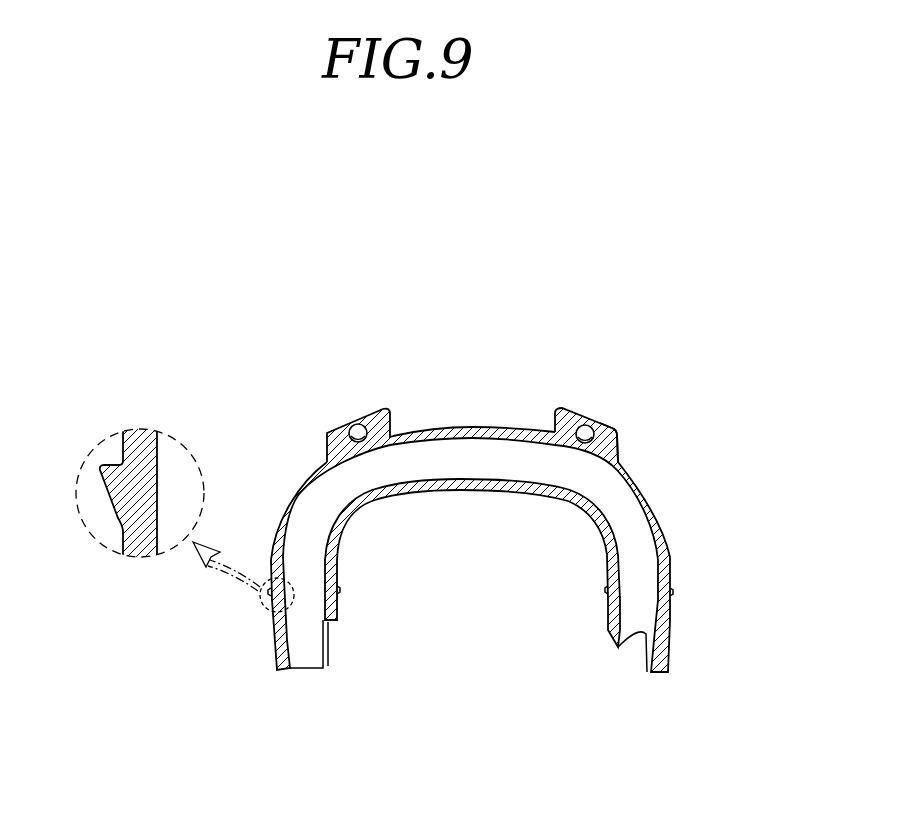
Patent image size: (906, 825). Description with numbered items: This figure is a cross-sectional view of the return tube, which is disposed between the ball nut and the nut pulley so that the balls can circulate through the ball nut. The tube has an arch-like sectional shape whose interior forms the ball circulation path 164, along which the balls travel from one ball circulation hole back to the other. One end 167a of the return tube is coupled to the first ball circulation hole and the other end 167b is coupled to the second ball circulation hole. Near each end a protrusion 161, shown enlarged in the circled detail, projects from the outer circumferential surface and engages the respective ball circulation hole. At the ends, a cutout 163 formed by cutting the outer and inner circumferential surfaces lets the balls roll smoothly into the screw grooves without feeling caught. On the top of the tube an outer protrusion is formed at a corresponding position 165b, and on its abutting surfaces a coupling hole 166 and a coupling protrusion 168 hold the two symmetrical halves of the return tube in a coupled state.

The protrusion 161 is at (110, 463).
The cutout 163 is at (337, 645).
The ball circulation path 164 is at (483, 455).
The position of outer protrusion 165b is at (612, 432).
The coupling hole 166 is at (360, 418).
The one end of the return tube 167a is at (278, 639).
The other end of the return tube 167b is at (672, 632).
The coupling protrusion 168 is at (583, 420).